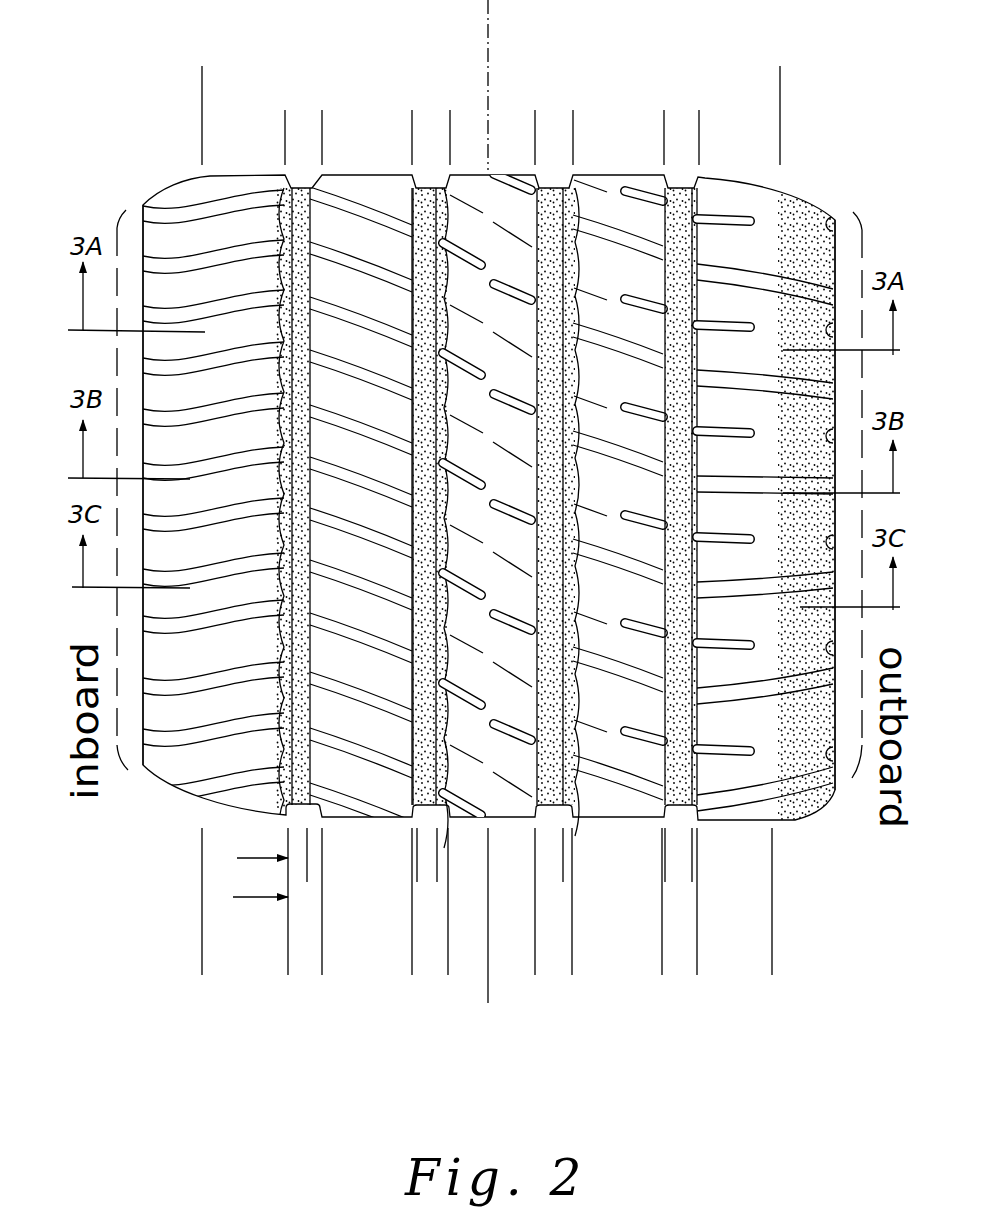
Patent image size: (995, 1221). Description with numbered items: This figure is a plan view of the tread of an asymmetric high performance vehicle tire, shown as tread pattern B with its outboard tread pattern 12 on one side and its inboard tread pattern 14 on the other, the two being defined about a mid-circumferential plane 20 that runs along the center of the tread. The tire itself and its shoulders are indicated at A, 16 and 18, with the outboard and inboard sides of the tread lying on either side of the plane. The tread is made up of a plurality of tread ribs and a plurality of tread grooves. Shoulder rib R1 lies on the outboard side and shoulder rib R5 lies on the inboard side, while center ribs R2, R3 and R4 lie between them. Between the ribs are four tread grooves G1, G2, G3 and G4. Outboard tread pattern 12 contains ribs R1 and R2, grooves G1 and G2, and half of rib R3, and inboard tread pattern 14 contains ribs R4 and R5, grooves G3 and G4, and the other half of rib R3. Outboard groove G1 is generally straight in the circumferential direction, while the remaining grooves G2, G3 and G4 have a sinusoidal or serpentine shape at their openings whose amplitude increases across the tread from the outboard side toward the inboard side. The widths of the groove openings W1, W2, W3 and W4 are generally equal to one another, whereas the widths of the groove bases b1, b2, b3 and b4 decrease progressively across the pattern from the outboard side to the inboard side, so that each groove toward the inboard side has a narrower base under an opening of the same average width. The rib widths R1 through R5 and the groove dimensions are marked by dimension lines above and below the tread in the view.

The outboard tread pattern 12 is at (661, 502).
The inboard tread pattern 14 is at (340, 502).
The outboard shoulder 16 is at (855, 205).
The inboard shoulder 18 is at (170, 167).
The mid-circumferential plane 20 is at (488, 12).
The tread A is at (143, 183).
The tread pattern B is at (257, 742).
The shoulder rib R1 is at (766, 520).
The center rib R2 is at (618, 520).
The center rib R3 is at (487, 520).
The center rib R4 is at (362, 520).
The shoulder rib R5 is at (217, 520).
The outboard tread groove G1 is at (686, 503).
The tread groove G2 is at (578, 503).
The tread groove G3 is at (443, 503).
The tread groove G4 is at (321, 503).
The groove opening width W1 is at (683, 137).
The groove opening width W2 is at (555, 137).
The groove opening width W3 is at (431, 137).
The groove opening width W4 is at (305, 137).
The groove base width b1 is at (697, 858).
The groove base width b2 is at (662, 858).
The groove base width b3 is at (535, 858).
The groove base width b4 is at (417, 858).